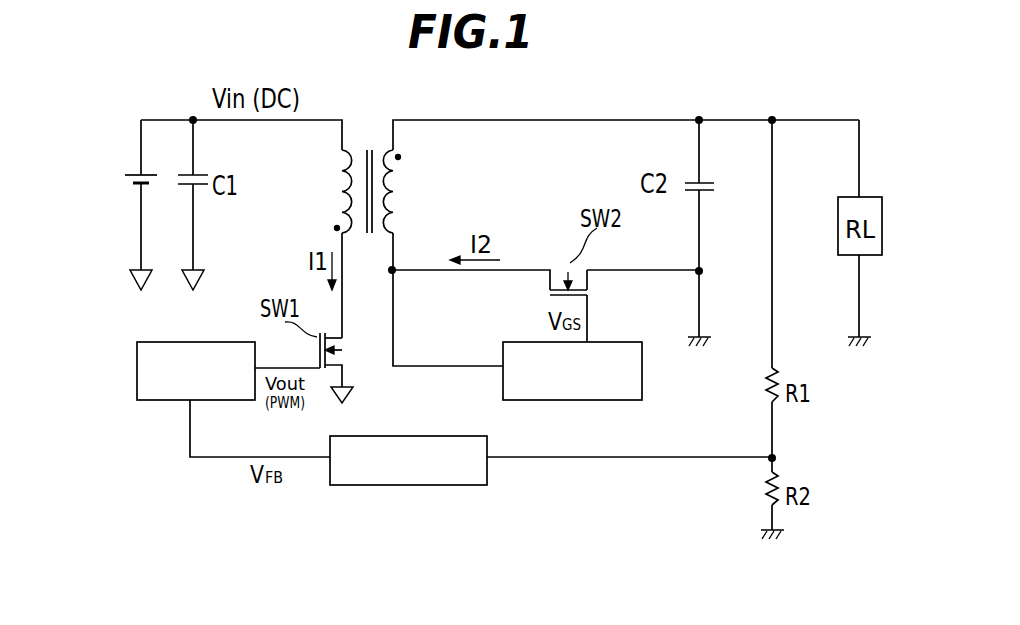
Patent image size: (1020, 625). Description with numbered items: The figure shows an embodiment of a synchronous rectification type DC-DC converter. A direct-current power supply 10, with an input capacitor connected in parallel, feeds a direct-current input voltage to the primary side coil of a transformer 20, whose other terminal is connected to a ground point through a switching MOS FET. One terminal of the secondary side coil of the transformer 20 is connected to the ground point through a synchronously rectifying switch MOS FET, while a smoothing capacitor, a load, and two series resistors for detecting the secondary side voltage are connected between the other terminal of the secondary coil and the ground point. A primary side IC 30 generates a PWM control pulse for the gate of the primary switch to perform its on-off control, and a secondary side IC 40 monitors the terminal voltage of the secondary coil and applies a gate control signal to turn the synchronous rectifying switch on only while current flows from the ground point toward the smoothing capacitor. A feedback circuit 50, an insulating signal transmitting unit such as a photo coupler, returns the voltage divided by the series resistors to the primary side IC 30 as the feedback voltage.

The direct-current power supply 10 is at (132, 170).
The transformer 20 is at (365, 132).
The primary side IC 30 is at (152, 402).
The secondary side IC 40 is at (580, 402).
The feedback circuit 50 is at (407, 487).